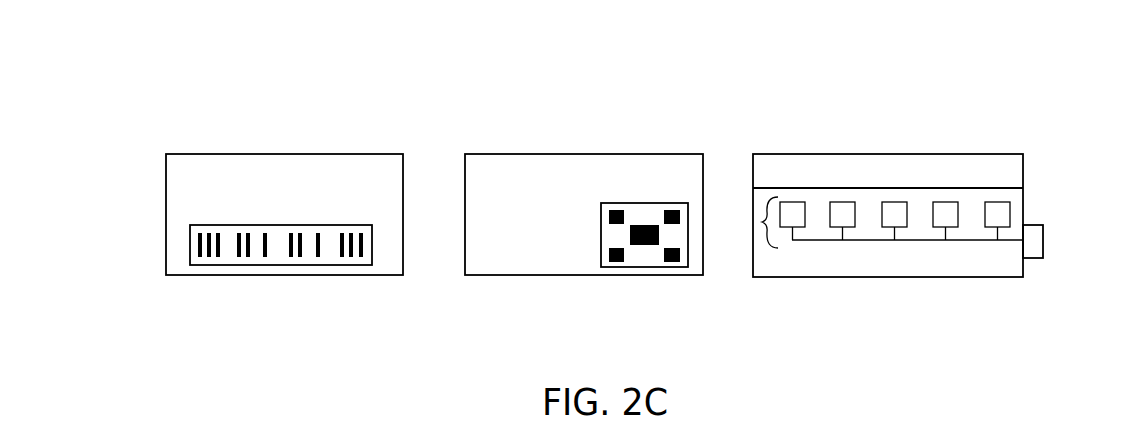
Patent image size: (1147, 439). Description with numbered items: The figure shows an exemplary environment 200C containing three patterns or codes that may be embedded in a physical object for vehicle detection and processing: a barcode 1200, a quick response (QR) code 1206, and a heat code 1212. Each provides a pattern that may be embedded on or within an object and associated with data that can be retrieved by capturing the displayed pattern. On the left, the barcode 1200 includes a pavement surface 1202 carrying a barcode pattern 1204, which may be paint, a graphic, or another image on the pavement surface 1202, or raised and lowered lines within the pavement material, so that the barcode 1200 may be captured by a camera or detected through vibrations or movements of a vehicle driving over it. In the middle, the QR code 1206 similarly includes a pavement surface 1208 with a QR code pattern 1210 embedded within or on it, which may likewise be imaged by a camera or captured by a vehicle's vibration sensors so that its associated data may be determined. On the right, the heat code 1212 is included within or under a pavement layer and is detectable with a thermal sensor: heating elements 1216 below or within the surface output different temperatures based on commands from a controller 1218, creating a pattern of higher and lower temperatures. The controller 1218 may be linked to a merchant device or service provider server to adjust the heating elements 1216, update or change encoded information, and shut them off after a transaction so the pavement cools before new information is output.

The environment 200C is at (921, 76).
The barcode 1200 is at (235, 201).
The pavement surface 1202 is at (235, 218).
The barcode pattern 1204 is at (175, 254).
The quick response (QR) code 1206 is at (584, 221).
The pavement surface 1208 is at (584, 237).
The QR code pattern 1210 is at (593, 240).
The heat code 1212 is at (901, 219).
The heating elements 1216 is at (767, 224).
The controller 1218 is at (1049, 236).